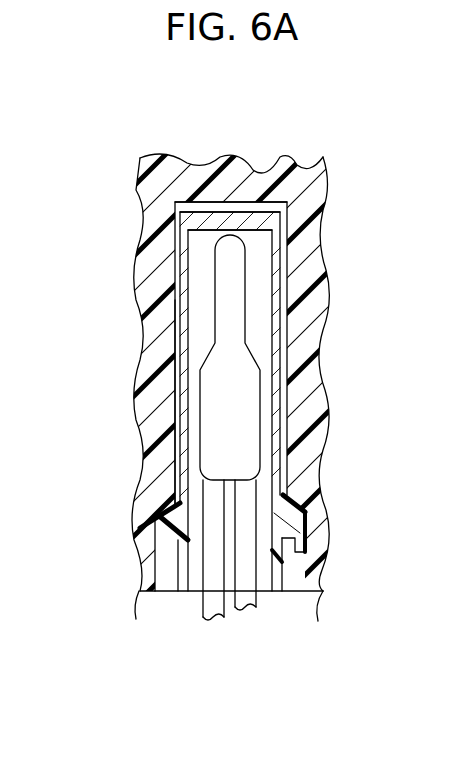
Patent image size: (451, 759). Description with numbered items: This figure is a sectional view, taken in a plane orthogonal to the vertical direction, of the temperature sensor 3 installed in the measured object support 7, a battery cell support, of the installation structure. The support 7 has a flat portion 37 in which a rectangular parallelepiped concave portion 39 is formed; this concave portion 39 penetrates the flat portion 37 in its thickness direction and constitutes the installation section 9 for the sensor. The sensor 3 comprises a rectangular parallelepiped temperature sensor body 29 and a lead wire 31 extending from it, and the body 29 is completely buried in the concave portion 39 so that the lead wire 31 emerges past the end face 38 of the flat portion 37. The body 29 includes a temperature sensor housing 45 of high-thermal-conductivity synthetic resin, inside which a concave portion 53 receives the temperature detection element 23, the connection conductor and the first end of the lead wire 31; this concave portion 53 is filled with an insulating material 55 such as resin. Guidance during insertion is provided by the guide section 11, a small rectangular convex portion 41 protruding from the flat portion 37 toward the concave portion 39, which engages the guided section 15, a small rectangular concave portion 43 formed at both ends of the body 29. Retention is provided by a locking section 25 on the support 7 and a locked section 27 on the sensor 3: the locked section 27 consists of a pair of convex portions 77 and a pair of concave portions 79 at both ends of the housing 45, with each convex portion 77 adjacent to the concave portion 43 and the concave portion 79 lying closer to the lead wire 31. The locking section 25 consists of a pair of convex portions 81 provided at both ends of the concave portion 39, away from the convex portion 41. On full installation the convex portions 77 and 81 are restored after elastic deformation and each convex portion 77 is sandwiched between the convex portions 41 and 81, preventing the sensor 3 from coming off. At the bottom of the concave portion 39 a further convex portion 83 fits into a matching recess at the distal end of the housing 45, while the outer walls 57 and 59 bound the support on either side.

The temperature sensor 3 is at (290, 332).
The measured object support 7 is at (225, 373).
The installation section 9 is at (161, 401).
The guide section 11 is at (225, 375).
The guided section 15 is at (225, 375).
The temperature detection element 23 is at (235, 294).
The locking section 25 is at (288, 599).
The locked section 27 is at (349, 523).
The temperature sensor body 29 is at (173, 438).
The lead wire 31 is at (200, 600).
The flat portion 37 is at (152, 520).
The end face 38 is at (137, 617).
The concave portion 39 is at (188, 275).
The convex portion 41 is at (225, 375).
The concave portion 43 is at (155, 367).
The temperature sensor housing 45 is at (257, 212).
The concave portion 53 is at (190, 315).
The insulating material 55 is at (180, 199).
The outer side wall 57 is at (137, 200).
The outer side wall 59 is at (305, 182).
The convex portion 77 is at (300, 521).
The concave portion 79 is at (292, 591).
The convex portion 81 is at (318, 578).
The convex portion 83 is at (226, 152).